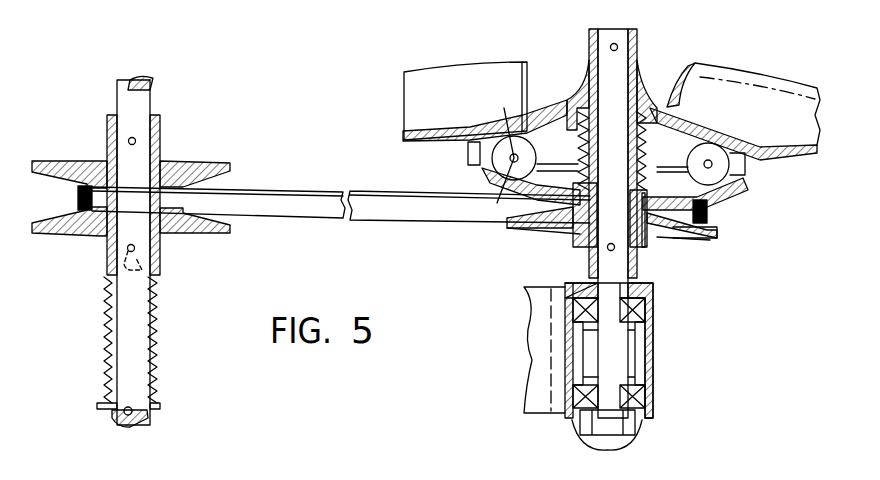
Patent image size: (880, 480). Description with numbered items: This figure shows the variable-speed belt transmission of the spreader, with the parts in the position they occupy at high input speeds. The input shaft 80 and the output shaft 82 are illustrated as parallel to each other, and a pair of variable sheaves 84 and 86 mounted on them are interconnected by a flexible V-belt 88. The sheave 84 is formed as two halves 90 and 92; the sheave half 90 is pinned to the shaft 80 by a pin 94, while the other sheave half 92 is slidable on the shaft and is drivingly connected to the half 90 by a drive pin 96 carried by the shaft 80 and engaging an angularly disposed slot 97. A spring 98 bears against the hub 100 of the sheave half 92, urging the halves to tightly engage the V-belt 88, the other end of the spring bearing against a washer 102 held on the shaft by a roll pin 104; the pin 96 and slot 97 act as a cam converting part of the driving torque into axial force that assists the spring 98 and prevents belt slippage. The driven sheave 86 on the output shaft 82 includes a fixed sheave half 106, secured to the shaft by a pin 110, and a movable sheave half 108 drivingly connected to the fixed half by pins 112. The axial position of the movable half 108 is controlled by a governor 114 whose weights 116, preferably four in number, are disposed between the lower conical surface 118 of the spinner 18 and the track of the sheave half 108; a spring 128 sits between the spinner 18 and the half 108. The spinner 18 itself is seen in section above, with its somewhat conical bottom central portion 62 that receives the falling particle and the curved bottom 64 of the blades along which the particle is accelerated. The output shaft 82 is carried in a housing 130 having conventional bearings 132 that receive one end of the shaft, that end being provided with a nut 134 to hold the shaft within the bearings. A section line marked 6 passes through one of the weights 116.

The input shaft 80 is at (146, 104).
The pin 94 is at (136, 140).
The variable sheave 84 is at (141, 189).
The sheave half 90 is at (172, 171).
The sheave half 92 is at (100, 232).
The flexible V-belt 88 is at (292, 190).
The drive pin 96 is at (135, 249).
The angularly disposed slot 97 is at (148, 274).
The hub 100 is at (107, 268).
The spring 98 is at (104, 329).
The washer 102 is at (157, 407).
The roll pin 104 is at (136, 418).
The output shaft 82 is at (622, 36).
The bottom central portion 62 is at (575, 90).
The curved bottom 64 is at (420, 131).
The spinner 18 is at (743, 95).
The section line 6 is at (501, 156).
The lower conical surface 118 is at (550, 122).
The weights 116 is at (500, 157).
The spring 128 is at (648, 131).
The governor 114 is at (480, 172).
The movable sheave half 108 is at (714, 197).
The driven sheave 86 is at (545, 236).
The pins 112 is at (645, 249).
The fixed sheave half 106 is at (685, 237).
The pin 110 is at (614, 250).
The bearings 132 is at (653, 306).
The housing 130 is at (653, 342).
The nut 134 is at (633, 428).